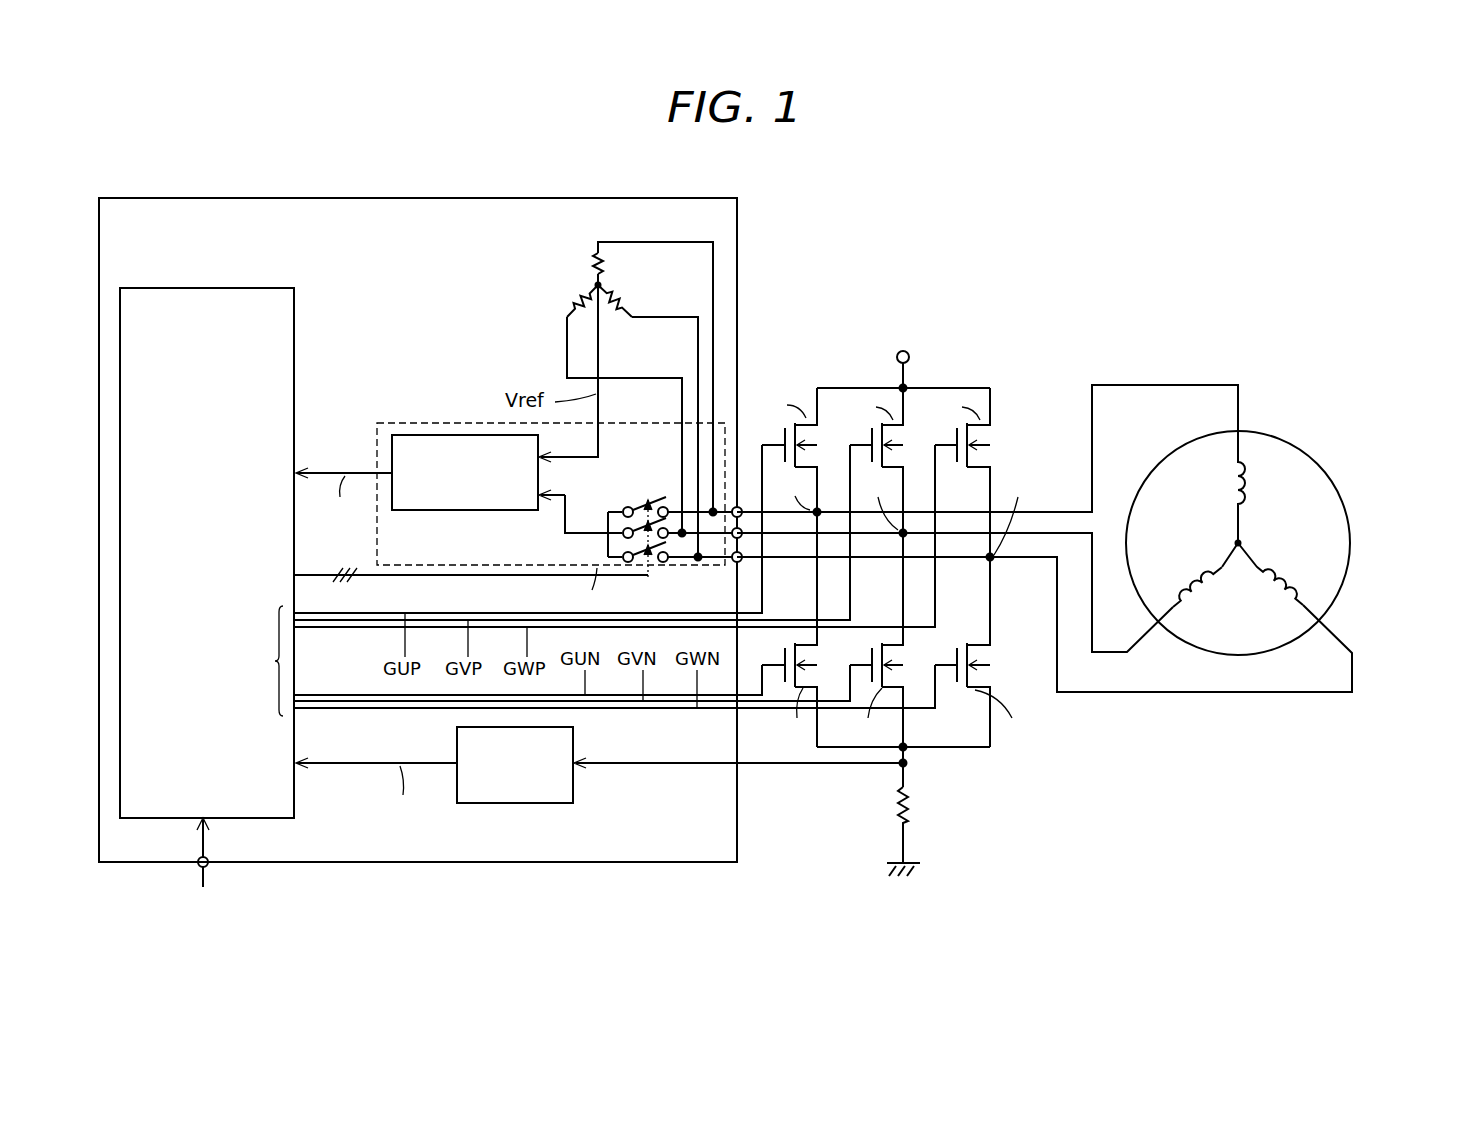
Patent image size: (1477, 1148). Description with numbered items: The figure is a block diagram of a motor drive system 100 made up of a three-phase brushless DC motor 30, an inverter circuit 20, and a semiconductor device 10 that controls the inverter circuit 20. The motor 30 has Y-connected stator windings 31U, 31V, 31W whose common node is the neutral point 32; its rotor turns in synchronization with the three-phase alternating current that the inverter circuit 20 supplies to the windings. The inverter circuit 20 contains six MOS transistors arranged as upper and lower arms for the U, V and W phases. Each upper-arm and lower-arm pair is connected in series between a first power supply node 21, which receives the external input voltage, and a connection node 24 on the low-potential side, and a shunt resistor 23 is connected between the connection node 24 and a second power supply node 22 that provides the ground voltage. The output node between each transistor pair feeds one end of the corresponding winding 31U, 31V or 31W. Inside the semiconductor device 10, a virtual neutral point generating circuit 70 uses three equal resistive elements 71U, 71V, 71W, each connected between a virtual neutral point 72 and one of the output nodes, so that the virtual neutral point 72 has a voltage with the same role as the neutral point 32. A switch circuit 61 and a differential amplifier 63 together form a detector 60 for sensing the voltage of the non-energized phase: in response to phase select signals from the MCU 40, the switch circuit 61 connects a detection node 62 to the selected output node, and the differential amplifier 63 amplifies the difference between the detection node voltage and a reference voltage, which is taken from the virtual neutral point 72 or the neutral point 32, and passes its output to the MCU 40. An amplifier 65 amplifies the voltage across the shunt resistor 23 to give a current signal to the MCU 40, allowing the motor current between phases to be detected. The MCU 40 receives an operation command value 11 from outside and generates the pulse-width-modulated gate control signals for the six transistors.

The motor drive system 100 is at (912, 203).
The semiconductor device 10 is at (660, 198).
The operation command value 11 is at (281, 868).
The microcontroller unit (MCU) 40 is at (228, 288).
The virtual neutral point generating circuit 70 is at (515, 384).
The resistive element 71U is at (596, 262).
The resistive element 71V is at (580, 300).
The resistive element 71W is at (618, 302).
The virtual neutral point 72 is at (596, 284).
The detector 60 is at (516, 493).
The switch circuit 61 is at (644, 492).
The detection node 62 is at (610, 515).
The differential amplifier 63 is at (425, 435).
The amplifier 65 is at (520, 804).
The inverter circuit 20 is at (891, 608).
The first power supply node 21 is at (896, 357).
The second power supply node 22 is at (915, 863).
The shunt resistor 23 is at (898, 812).
The connection node 24 is at (906, 752).
The three-phase brushless DC motor 30 is at (1295, 566).
The stator winding 31U is at (1222, 478).
The stator winding 31V is at (1206, 625).
The stator winding 31W is at (1272, 625).
The neutral point 32 is at (1242, 545).